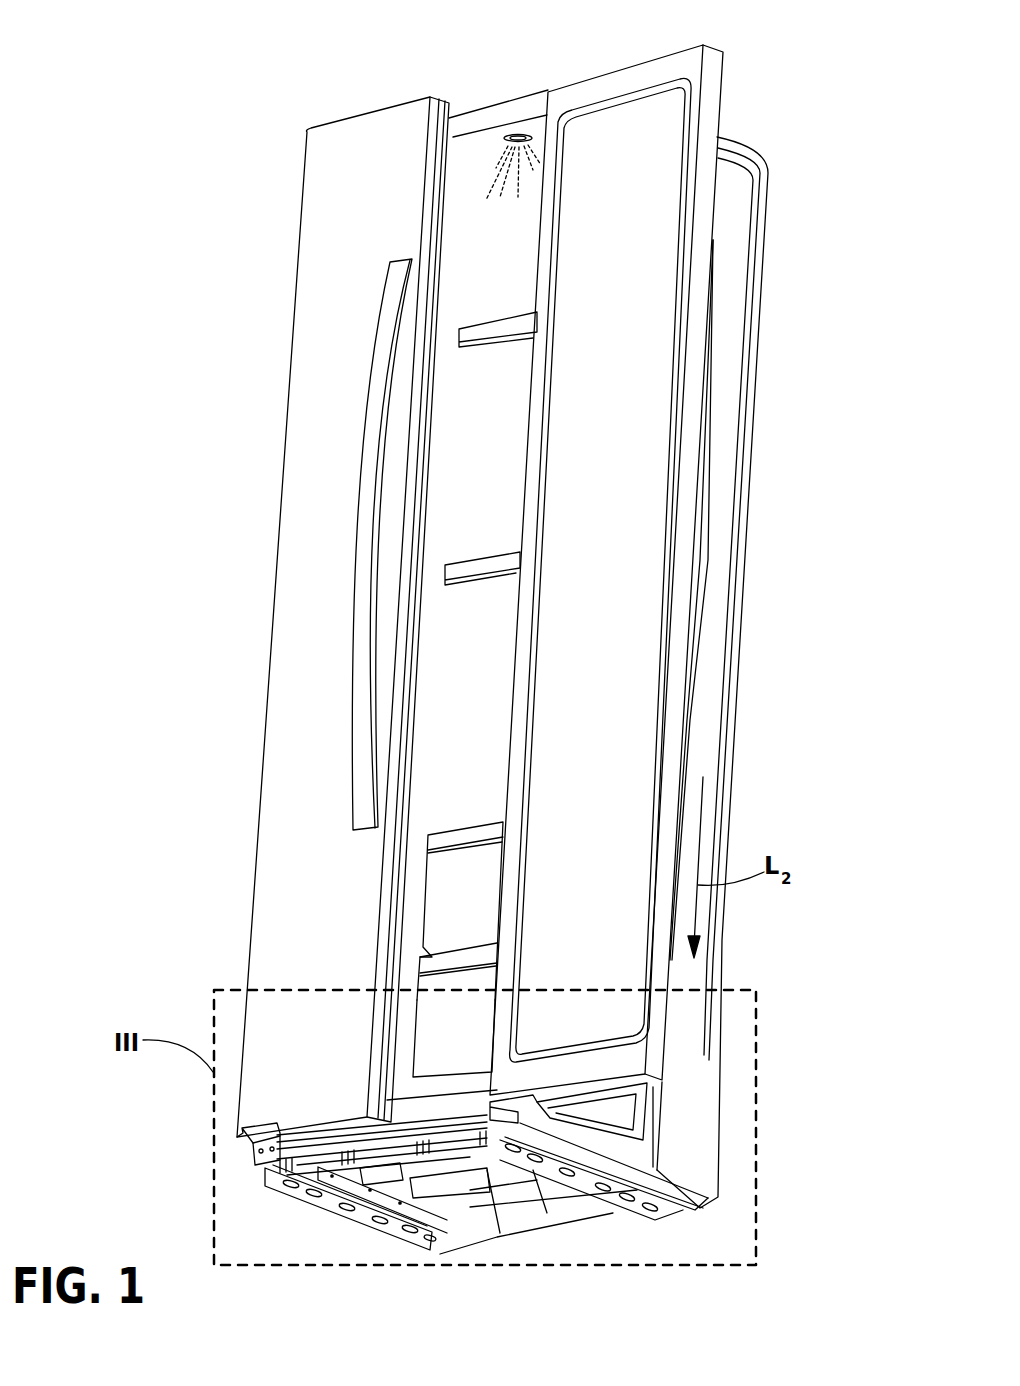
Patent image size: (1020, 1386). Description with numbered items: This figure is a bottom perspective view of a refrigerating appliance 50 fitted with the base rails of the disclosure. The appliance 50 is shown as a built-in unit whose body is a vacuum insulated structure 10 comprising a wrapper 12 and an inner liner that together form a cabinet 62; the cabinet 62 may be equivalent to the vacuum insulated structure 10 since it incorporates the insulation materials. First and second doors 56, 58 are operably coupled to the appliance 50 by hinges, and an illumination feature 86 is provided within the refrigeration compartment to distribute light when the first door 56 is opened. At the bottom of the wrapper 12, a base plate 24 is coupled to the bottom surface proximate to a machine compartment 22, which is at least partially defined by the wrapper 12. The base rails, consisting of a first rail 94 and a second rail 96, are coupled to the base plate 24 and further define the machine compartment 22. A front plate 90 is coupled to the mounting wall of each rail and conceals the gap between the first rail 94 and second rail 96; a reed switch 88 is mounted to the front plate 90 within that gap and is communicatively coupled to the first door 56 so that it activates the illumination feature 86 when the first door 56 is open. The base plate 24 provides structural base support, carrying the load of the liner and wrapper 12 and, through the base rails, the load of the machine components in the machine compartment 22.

The vacuum insulated structure 10 is at (763, 379).
The wrapper 12 is at (722, 578).
The machine compartment 22 is at (690, 1130).
The base plate 24 is at (420, 1193).
The refrigerating appliance 50 is at (788, 97).
The first door 56 is at (703, 219).
The second door 58 is at (335, 226).
The cabinet 62 is at (768, 286).
The illumination feature 86 is at (518, 137).
The reed switch 88 is at (375, 1173).
The front plate 90 is at (267, 1167).
The first rail 94 is at (333, 1200).
The second rail 96 is at (613, 1195).